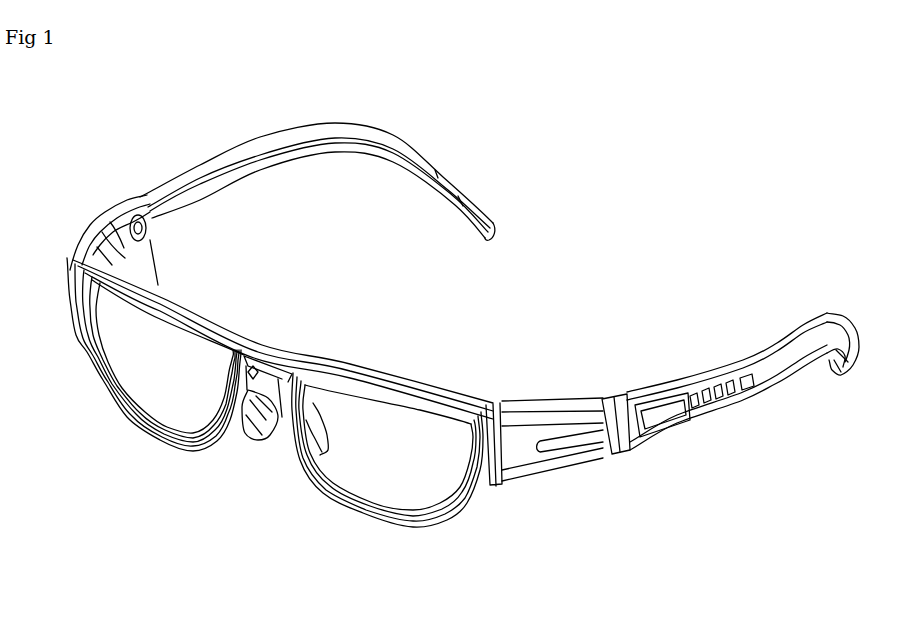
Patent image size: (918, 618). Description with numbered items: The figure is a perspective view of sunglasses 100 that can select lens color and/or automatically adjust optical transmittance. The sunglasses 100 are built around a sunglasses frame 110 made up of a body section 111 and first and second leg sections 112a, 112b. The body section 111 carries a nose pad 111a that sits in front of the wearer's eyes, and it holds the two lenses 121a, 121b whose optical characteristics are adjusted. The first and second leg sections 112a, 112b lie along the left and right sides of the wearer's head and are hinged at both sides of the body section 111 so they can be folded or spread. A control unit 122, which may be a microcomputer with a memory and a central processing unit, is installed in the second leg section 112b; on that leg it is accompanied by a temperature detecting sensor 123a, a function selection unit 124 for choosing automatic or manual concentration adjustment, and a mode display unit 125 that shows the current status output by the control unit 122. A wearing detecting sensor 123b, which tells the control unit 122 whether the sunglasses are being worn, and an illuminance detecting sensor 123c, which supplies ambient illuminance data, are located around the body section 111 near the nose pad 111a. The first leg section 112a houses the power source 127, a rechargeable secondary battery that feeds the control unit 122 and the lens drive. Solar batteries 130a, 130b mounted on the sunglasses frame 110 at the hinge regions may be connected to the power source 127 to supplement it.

The sunglasses 100 is at (602, 186).
The sunglasses frame 110 is at (67, 287).
The body section 111 is at (210, 313).
The nose pad 111a is at (228, 443).
The first leg section 112a is at (216, 165).
The second leg section 112b is at (762, 357).
The lens 121a is at (167, 380).
The lens 121b is at (418, 481).
The control unit 122 is at (627, 443).
The temperature detecting sensor 123a is at (513, 413).
The wearing detecting sensor 123b is at (294, 457).
The illuminance detecting sensor 123c is at (253, 360).
The function selection unit 124 is at (730, 397).
The mode display unit 125 is at (673, 427).
The power source 127 is at (197, 194).
The solar battery 130a is at (143, 228).
The solar battery 130b is at (387, 370).